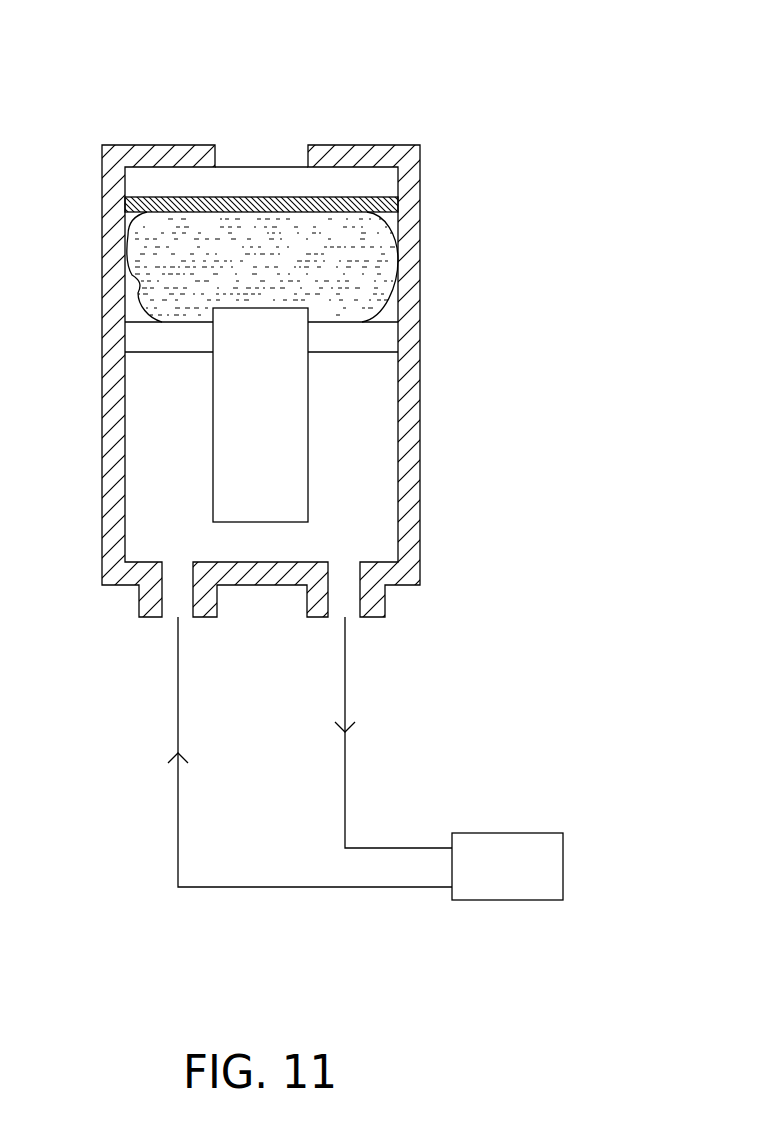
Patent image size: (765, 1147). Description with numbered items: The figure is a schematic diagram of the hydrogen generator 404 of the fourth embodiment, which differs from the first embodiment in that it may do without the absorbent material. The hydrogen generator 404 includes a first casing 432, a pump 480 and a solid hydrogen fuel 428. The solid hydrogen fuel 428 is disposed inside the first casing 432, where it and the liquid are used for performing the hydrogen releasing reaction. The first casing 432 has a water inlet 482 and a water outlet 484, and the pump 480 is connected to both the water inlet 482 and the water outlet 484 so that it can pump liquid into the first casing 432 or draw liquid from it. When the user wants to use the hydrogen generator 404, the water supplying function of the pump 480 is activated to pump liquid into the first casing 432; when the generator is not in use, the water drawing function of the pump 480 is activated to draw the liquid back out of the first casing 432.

The hydrogen generator 404 is at (610, 60).
The solid hydrogen fuel 428 is at (290, 422).
The first casing 432 is at (421, 304).
The pump 480 is at (565, 868).
The water inlet 482 is at (170, 627).
The water outlet 484 is at (352, 622).